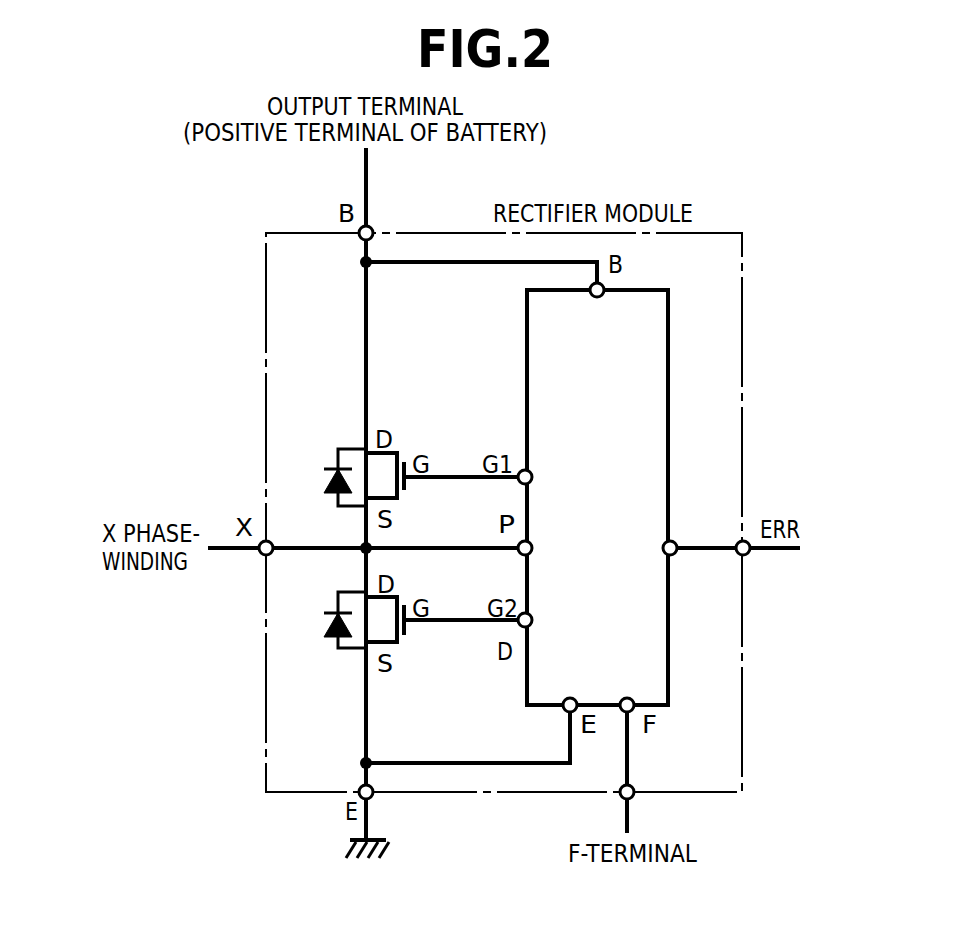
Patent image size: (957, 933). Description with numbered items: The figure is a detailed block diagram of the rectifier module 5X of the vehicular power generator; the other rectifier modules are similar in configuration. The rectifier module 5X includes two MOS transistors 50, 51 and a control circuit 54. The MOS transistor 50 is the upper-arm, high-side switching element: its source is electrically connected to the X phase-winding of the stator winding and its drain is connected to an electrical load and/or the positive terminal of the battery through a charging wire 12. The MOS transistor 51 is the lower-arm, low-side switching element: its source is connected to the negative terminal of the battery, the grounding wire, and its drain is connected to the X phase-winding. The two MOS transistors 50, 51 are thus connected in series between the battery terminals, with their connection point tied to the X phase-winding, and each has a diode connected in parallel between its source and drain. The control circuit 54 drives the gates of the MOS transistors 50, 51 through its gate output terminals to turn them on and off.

The charging wire 12 is at (368, 180).
The rectifier module 5X is at (742, 232).
The control circuit 54 is at (657, 290).
The MOS transistor 50 is at (347, 449).
The MOS transistor 51 is at (345, 650).